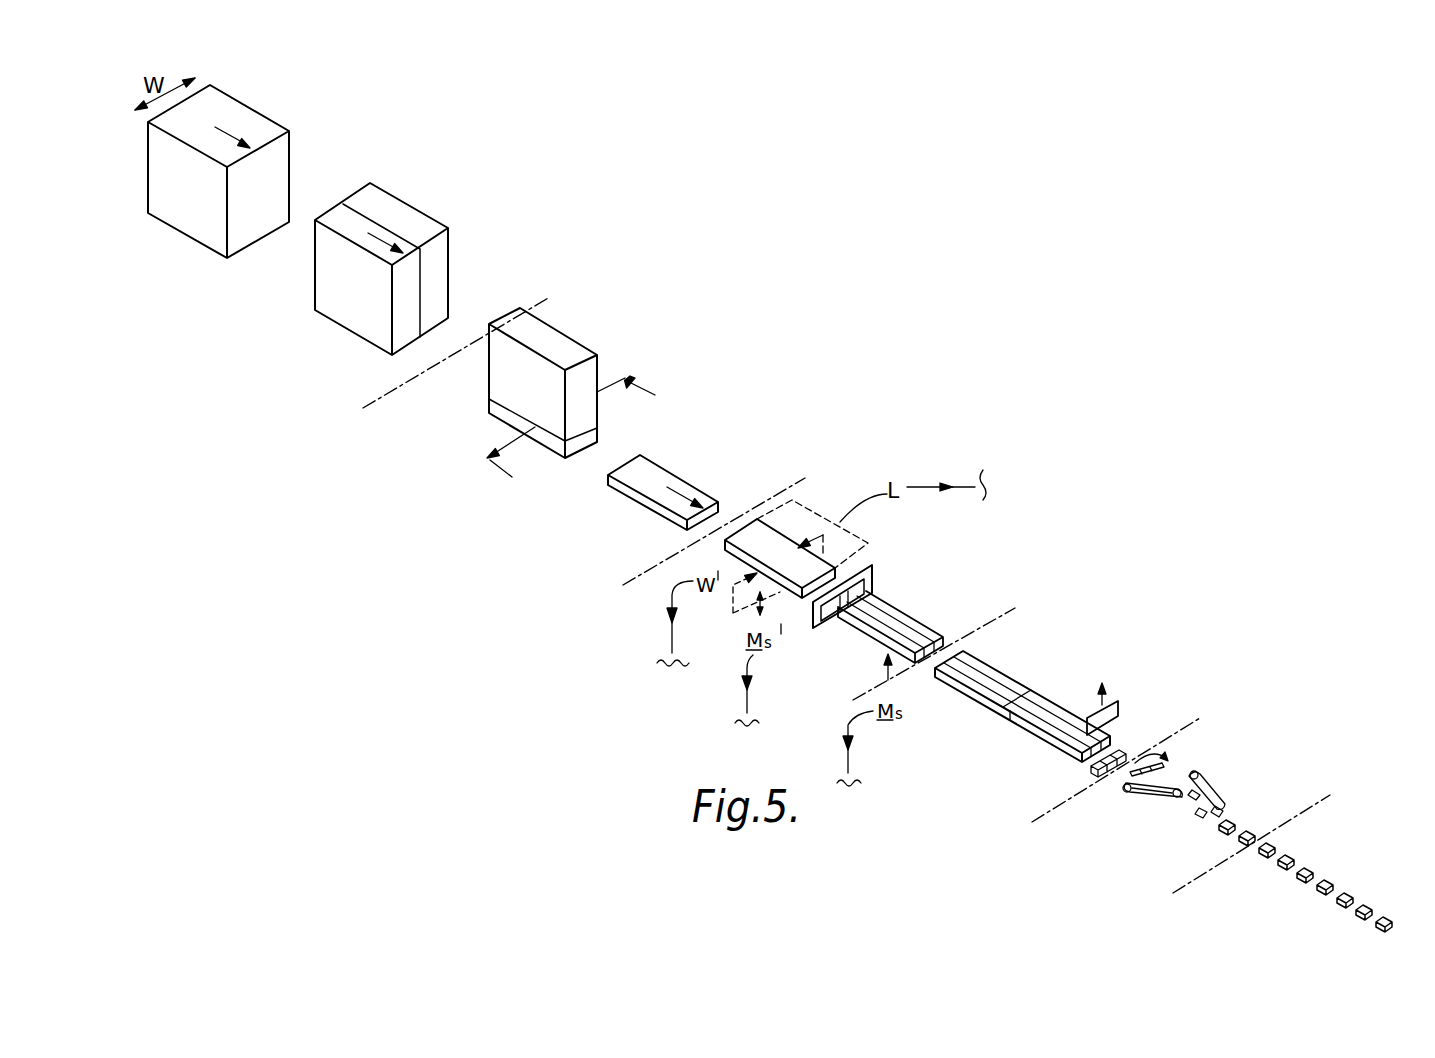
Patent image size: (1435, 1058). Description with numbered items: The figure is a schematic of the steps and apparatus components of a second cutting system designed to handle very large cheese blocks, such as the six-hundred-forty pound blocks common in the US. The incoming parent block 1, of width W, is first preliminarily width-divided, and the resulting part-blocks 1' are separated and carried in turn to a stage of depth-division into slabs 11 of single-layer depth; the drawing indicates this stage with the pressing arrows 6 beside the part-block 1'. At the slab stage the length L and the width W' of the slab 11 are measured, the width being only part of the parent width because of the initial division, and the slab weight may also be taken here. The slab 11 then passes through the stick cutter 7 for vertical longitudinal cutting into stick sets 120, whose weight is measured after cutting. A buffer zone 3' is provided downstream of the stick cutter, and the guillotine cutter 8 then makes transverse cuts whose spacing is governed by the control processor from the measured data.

The parent block 1 is at (242, 171).
The part-block 1' is at (437, 305).
The pressing device 6 is at (662, 363).
The slab 11 is at (681, 478).
The extrusion die 7 is at (877, 575).
The stick set 120 is at (864, 654).
The buffer zone 3' is at (1026, 673).
The guillotine cutter 8 is at (1128, 719).